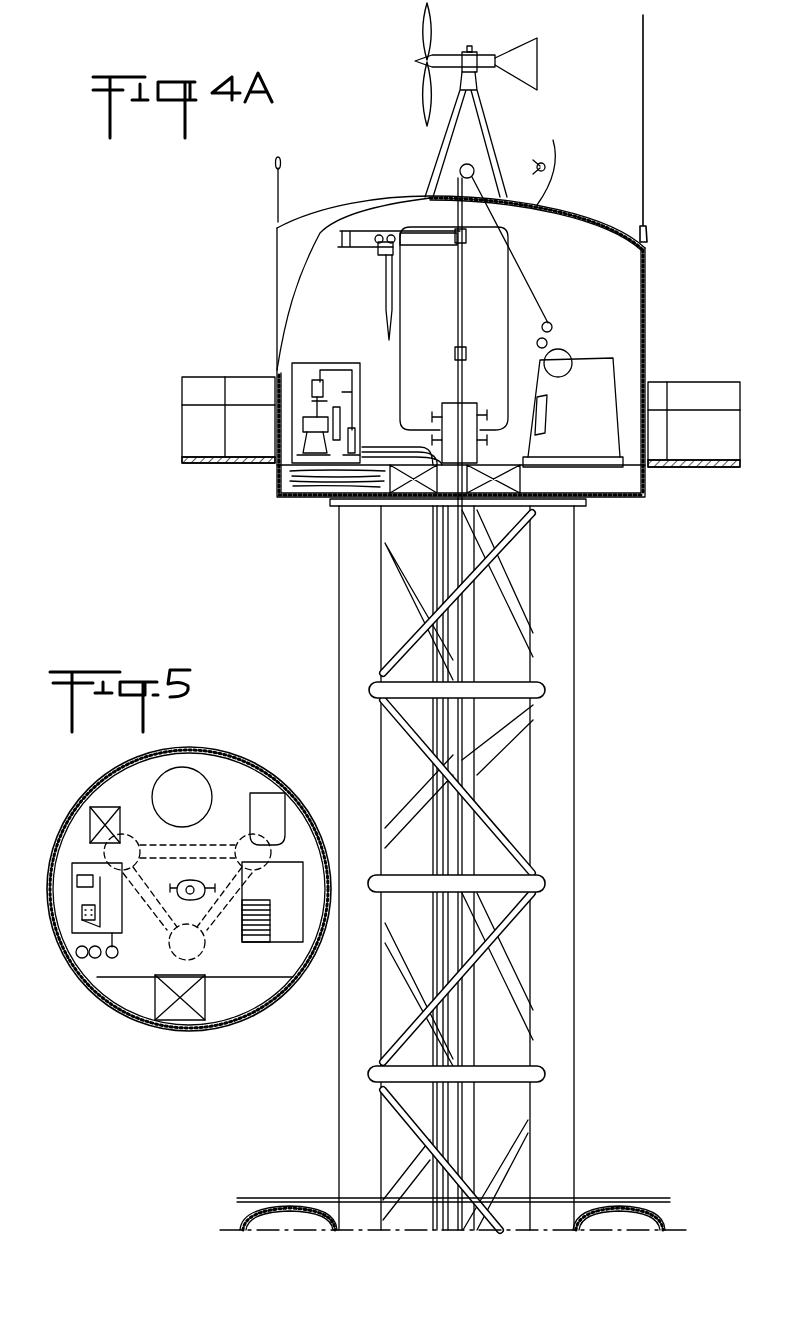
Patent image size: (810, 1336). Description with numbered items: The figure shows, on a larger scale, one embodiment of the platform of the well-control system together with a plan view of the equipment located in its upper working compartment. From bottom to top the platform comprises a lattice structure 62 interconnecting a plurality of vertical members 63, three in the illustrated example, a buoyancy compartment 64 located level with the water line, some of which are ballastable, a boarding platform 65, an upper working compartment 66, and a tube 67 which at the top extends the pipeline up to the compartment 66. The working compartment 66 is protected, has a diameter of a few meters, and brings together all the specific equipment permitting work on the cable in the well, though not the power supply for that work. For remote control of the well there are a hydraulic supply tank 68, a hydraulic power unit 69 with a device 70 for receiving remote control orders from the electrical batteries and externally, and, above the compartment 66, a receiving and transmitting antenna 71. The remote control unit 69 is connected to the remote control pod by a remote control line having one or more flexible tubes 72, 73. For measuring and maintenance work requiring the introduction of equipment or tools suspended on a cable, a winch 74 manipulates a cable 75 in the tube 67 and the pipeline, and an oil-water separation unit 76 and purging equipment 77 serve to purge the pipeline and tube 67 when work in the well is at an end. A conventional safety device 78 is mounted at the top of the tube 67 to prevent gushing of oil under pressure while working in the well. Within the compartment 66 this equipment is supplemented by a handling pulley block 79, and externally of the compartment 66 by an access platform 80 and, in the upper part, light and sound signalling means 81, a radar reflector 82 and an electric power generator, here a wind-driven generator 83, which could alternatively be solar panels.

In FIG. 4A, the lattice structure 62 is at (500, 795).
In FIG. 4A, the vertical members 63 is at (553, 1010).
In FIG. 5, the vertical members 63 is at (187, 950).
In FIG. 4A, the buoyancy compartment 64 is at (663, 1225).
In FIG. 4A, the boarding platform 65 is at (253, 1198).
In FIG. 4A, the upper working compartment 66 is at (615, 317).
In FIG. 5, the upper working compartment 66 is at (270, 1007).
In FIG. 4A, the tube 67 is at (460, 730).
In FIG. 4A, the hydraulic supply tank 68 is at (312, 480).
In FIG. 4A, the hydraulic power unit 69 is at (302, 372).
In FIG. 5, the hydraulic power unit 69 is at (83, 928).
In FIG. 5, the device for receiving remote control orders 70 is at (163, 997).
In FIG. 4A, the receiving and transmitting antenna 71 is at (647, 110).
In FIG. 4A, the flexible tube 72 is at (437, 567).
In FIG. 4A, the flexible tube 73 is at (447, 577).
In FIG. 4A, the winch 74 is at (590, 385).
In FIG. 5, the winch 74 is at (283, 870).
In FIG. 4A, the cable 75 is at (540, 290).
In FIG. 5, the oil-water separation unit 76 is at (103, 807).
In FIG. 5, the purging equipment 77 is at (270, 803).
In FIG. 4A, the safety device 78 is at (446, 403).
In FIG. 4A, the handling pulley block 79 is at (378, 250).
In FIG. 4A, the access platform 80 is at (200, 455).
In FIG. 4A, the light and sound signalling means 81 is at (281, 197).
In FIG. 4A, the radar reflector 82 is at (553, 186).
In FIG. 4A, the wind-driven generator 83 is at (517, 60).